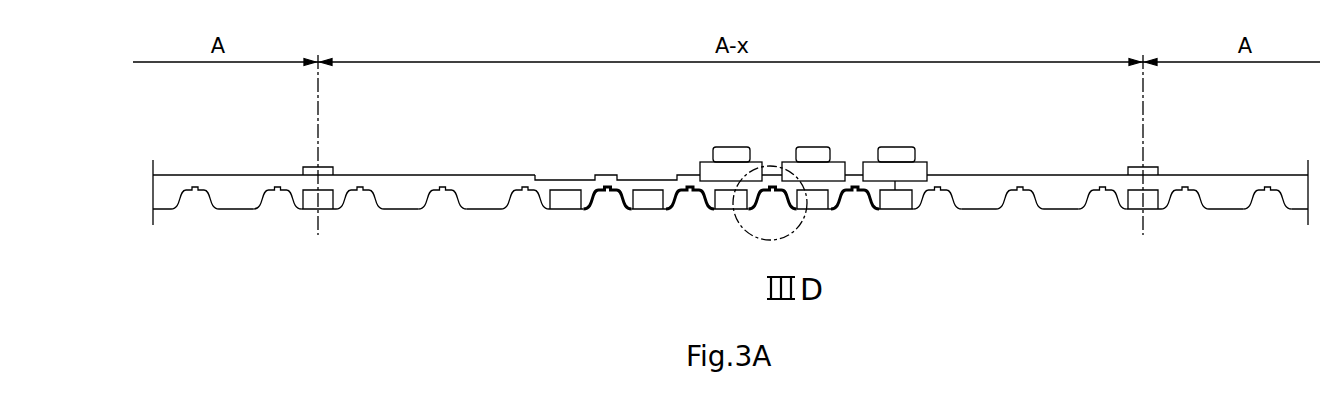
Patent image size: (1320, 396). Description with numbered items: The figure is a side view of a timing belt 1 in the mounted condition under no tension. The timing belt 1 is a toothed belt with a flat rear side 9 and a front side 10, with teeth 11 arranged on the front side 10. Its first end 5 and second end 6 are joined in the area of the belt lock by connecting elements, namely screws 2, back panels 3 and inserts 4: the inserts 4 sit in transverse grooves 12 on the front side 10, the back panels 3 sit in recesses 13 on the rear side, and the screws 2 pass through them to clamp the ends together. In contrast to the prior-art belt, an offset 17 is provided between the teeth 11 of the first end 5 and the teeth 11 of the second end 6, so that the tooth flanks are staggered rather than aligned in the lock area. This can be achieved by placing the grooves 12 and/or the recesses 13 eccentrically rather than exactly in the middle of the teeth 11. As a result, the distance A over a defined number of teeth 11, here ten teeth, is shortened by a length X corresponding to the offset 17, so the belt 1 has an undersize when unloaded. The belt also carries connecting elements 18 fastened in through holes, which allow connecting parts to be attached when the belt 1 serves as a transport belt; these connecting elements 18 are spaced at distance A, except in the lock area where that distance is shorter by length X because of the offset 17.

The timing belt 1 is at (730, 188).
The screws 2 is at (813, 133).
The back panels 3 is at (875, 168).
The inserts 4 is at (895, 203).
The first end 5 is at (1058, 185).
The second end 6 is at (480, 188).
The rear side 9 is at (730, 138).
The front side 10 is at (730, 240).
The teeth 11 is at (1055, 210).
The grooves 12 is at (647, 200).
The recesses 13 is at (623, 175).
The offset 17 is at (788, 200).
The connecting elements 18 is at (327, 200).